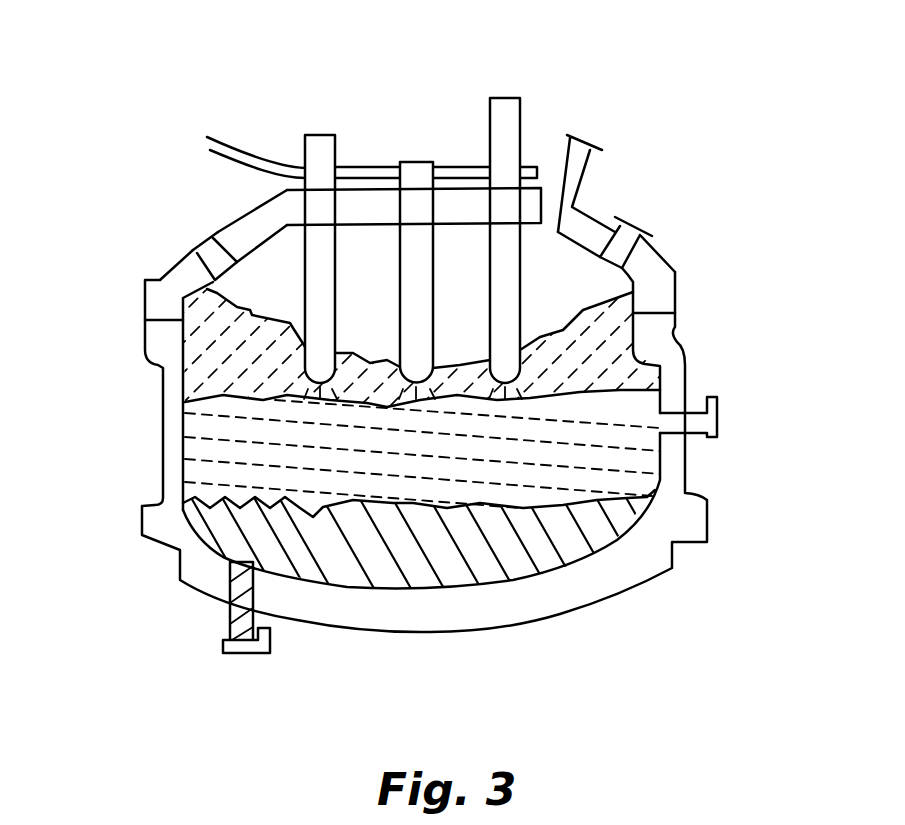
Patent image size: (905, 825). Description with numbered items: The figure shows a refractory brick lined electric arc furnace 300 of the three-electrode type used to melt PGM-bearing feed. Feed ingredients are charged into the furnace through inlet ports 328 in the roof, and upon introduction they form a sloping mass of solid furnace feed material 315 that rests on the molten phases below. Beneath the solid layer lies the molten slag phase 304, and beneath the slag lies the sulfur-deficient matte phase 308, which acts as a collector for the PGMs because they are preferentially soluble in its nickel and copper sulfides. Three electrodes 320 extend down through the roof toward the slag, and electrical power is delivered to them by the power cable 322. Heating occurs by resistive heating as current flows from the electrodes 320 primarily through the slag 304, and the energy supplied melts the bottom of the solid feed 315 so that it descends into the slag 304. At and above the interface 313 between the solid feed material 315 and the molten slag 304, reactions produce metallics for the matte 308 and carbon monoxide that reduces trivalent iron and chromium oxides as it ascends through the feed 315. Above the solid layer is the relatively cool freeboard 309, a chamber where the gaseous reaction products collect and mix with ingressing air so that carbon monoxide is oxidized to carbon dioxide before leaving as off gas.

The furnace 300 is at (601, 58).
The slag phase 304 is at (230, 440).
The matte phase 308 is at (530, 547).
The freeboard 309 is at (273, 270).
The interface 313 is at (607, 356).
The solid furnace feed material 315 is at (597, 330).
The electrodes 320 is at (503, 92).
The power cable 322 is at (217, 155).
The inlet ports 328 is at (193, 250).